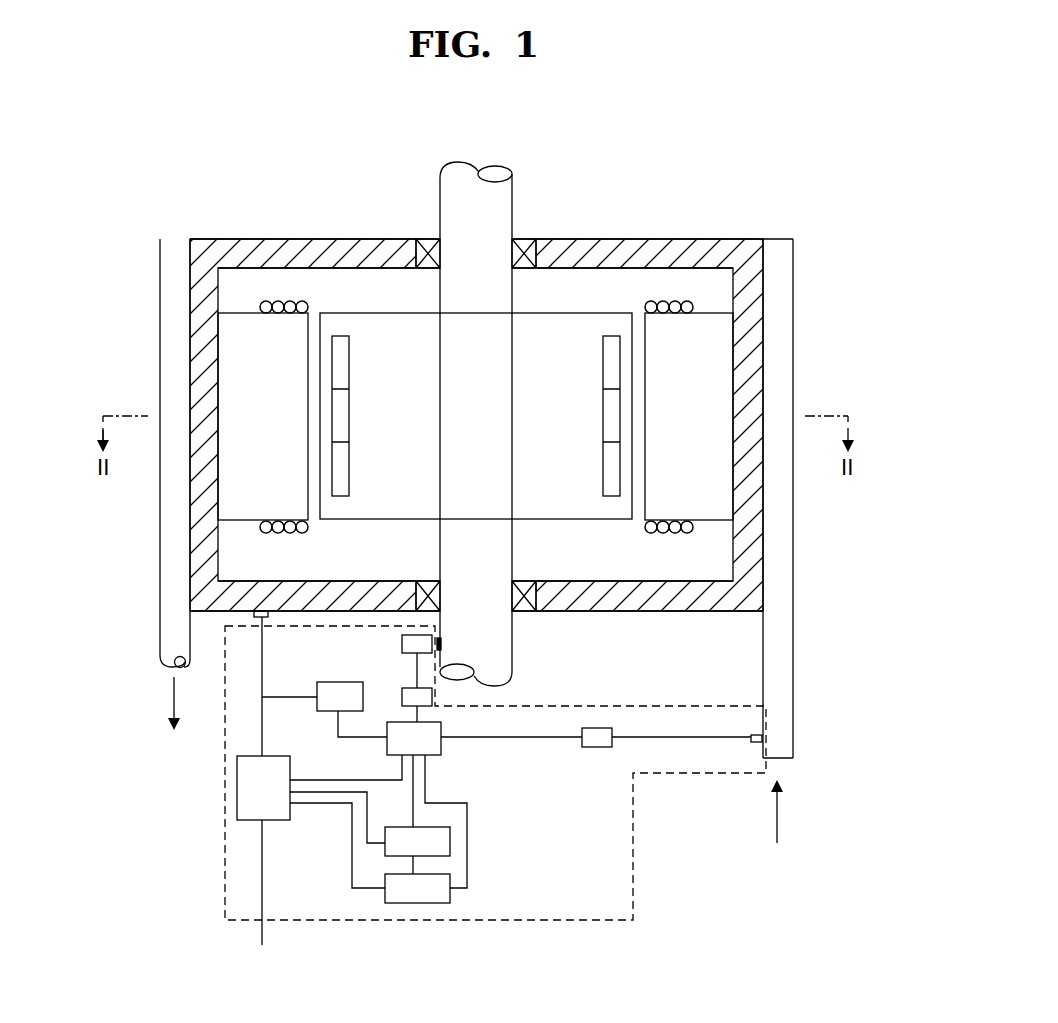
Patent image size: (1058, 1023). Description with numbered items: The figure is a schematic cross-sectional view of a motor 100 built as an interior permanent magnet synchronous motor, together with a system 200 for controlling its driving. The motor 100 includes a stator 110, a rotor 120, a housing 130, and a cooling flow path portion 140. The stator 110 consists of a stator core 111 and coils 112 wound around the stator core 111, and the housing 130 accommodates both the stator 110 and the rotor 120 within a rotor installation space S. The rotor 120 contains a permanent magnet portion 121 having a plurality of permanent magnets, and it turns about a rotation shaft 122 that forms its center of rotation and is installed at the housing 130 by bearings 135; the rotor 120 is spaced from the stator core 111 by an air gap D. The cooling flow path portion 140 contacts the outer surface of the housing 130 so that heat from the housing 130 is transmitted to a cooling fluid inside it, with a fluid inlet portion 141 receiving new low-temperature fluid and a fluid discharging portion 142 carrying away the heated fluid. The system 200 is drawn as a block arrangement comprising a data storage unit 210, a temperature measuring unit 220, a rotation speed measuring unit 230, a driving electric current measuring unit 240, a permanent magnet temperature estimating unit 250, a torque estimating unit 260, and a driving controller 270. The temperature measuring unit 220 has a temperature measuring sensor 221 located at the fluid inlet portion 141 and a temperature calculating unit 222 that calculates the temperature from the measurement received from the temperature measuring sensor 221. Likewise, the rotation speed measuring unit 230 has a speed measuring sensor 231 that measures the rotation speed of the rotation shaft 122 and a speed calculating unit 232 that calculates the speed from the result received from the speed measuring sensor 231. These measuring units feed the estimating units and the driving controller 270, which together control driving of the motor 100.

The motor 100 is at (795, 203).
The stator 110 is at (536, 360).
The stator core 111 is at (703, 343).
The coils 112 is at (690, 527).
The rotor 120 is at (484, 426).
The permanent magnet portion 121 is at (611, 497).
The rotation shaft 122 is at (446, 208).
The housing 130 is at (657, 245).
The bearings 135 is at (527, 243).
The cooling flow path portion 140 is at (782, 383).
The fluid inlet portion 141 is at (793, 718).
The fluid discharging portion 142 is at (168, 640).
The system for controlling a motor 200 is at (572, 920).
The data storage unit 210 is at (450, 893).
The temperature measuring unit 220 is at (667, 797).
The temperature measuring sensor 221 is at (741, 777).
The temperature calculating unit 222 is at (596, 748).
The rotation speed measuring unit 230 is at (347, 683).
The speed measuring sensor 231 is at (402, 641).
The speed calculating unit 232 is at (402, 695).
The driving electric current measuring unit 240 is at (326, 712).
The permanent magnet temperature estimating unit 250 is at (441, 752).
The torque estimating unit 260 is at (450, 843).
The driving controller 270 is at (278, 821).
The air gap D is at (316, 325).
The rotor installation space S is at (600, 291).